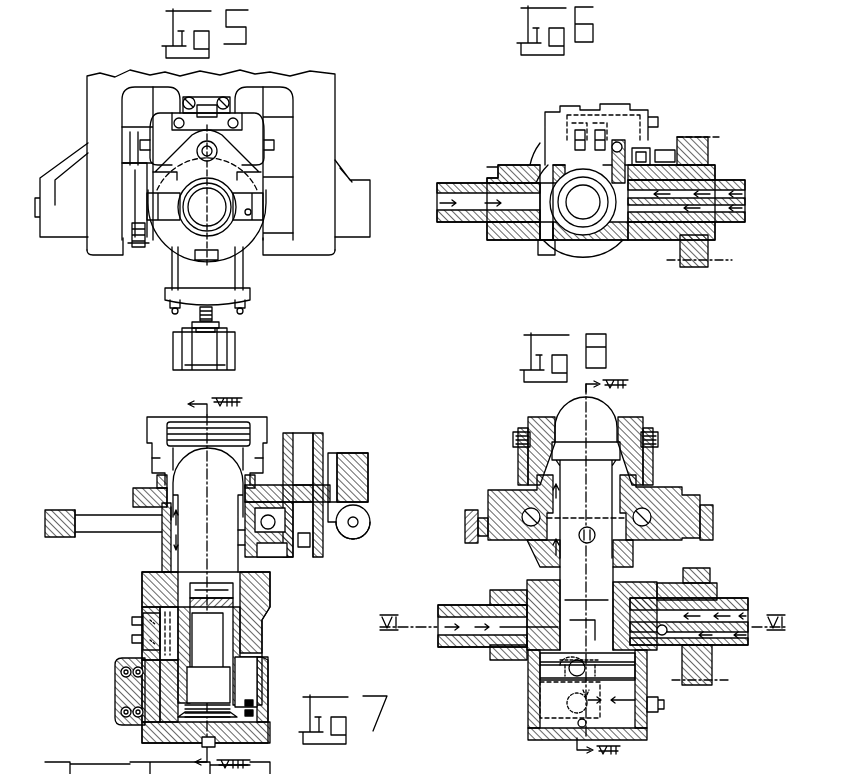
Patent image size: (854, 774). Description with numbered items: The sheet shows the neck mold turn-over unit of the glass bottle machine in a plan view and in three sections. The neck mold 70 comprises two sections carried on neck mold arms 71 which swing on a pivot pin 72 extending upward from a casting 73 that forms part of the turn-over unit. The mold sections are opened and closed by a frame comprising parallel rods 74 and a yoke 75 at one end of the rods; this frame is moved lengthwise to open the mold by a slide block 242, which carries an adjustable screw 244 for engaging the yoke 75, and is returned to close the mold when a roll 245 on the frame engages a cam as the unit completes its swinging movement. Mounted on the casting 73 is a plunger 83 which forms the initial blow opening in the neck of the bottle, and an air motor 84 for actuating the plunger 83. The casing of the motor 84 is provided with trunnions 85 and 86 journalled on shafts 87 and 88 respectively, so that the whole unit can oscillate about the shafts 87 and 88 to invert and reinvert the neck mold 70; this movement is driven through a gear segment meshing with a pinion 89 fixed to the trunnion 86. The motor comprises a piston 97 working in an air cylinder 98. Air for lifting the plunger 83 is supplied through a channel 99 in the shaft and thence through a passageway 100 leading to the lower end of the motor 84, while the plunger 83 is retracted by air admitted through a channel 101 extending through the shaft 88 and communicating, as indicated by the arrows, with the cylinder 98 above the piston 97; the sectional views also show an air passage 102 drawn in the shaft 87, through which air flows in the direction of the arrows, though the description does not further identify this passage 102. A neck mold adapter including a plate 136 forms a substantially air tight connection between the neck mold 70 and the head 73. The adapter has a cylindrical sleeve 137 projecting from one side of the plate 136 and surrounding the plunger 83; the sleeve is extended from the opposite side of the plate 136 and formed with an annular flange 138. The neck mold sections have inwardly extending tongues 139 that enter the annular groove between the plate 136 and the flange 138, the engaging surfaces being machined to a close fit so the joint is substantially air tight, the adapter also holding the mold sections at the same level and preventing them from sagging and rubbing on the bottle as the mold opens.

In FIG. 5, the neck mold 70 is at (240, 230).
In FIG. 7, the neck mold 70 is at (166, 428).
In FIG. 8, the neck mold 70 is at (629, 418).
In FIG. 8, the neck mold arms 71 is at (655, 465).
In FIG. 7, the pivot pin 72 is at (315, 435).
In FIG. 7, the casting 73 is at (325, 545).
In FIG. 8, the casting 73 is at (684, 496).
In FIG. 5, the parallel rods 74 is at (172, 275).
In FIG. 5, the yoke 75 is at (197, 310).
In FIG. 7, the plunger 83 is at (232, 466).
In FIG. 8, the plunger 83 is at (565, 412).
In FIG. 8, the air motor 84 is at (528, 695).
In FIG. 8, the trunnion 85 is at (496, 656).
In FIG. 8, the trunnion 86 is at (663, 660).
In FIG. 6, the shaft 87 is at (455, 183).
In FIG. 8, the shaft 87 is at (462, 605).
In FIG. 8, the shaft 88 is at (718, 598).
In FIG. 5, the pinion 89 is at (138, 248).
In FIG. 6, the pinion 89 is at (696, 268).
In FIG. 8, the pinion 89 is at (713, 679).
In FIG. 7, the piston 97 is at (248, 707).
In FIG. 7, the air cylinder 98 is at (260, 657).
In FIG. 6, the channel 99 is at (744, 193).
In FIG. 8, the channel 99 is at (750, 616).
In FIG. 7, the passageway 100 is at (146, 730).
In FIG. 8, the passageway 100 is at (620, 706).
In FIG. 6, the channel 101 is at (742, 208).
In FIG. 8, the channel 101 is at (728, 636).
In FIG. 6, the inlet channel 102 is at (463, 212).
In FIG. 8, the inlet channel 102 is at (435, 634).
In FIG. 7, the plate 136 is at (137, 489).
In FIG. 8, the plate 136 is at (503, 489).
In FIG. 7, the sleeve 137 is at (162, 524).
In FIG. 7, the annular flange 138 is at (166, 474).
In FIG. 7, the tongues 139 is at (158, 482).
In FIG. 5, the slide block 242 is at (220, 345).
In FIG. 5, the adjustable screw 244 is at (200, 323).
In FIG. 7, the roll 245 is at (370, 526).